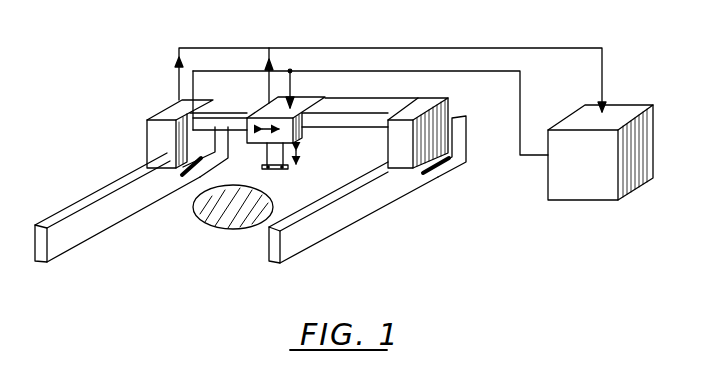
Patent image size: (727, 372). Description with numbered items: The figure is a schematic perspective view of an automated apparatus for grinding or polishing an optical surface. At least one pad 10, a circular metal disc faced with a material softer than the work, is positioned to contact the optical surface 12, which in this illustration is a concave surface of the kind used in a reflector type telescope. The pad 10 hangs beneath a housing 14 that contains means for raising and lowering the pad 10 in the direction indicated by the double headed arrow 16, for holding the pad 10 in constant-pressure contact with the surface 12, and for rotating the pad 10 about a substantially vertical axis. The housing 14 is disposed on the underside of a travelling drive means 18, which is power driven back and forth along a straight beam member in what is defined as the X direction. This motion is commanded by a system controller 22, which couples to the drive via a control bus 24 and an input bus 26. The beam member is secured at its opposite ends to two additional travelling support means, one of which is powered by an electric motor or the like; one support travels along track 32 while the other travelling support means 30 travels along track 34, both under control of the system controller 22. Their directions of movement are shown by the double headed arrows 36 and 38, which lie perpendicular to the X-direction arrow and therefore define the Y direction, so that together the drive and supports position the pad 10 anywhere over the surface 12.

The pad 10 is at (278, 169).
The optical surface 12 is at (207, 223).
The housing 14 is at (268, 157).
The double headed arrow 16 is at (298, 157).
The travelling drive means 18 is at (313, 97).
The system controller 22 is at (600, 152).
The control bus 24 is at (520, 110).
The input bus 26 is at (545, 48).
The travelling support means 30 is at (443, 116).
The track 32 is at (83, 212).
The track 34 is at (337, 218).
The double headed arrow 36 is at (195, 168).
The double headed arrow 38 is at (438, 163).